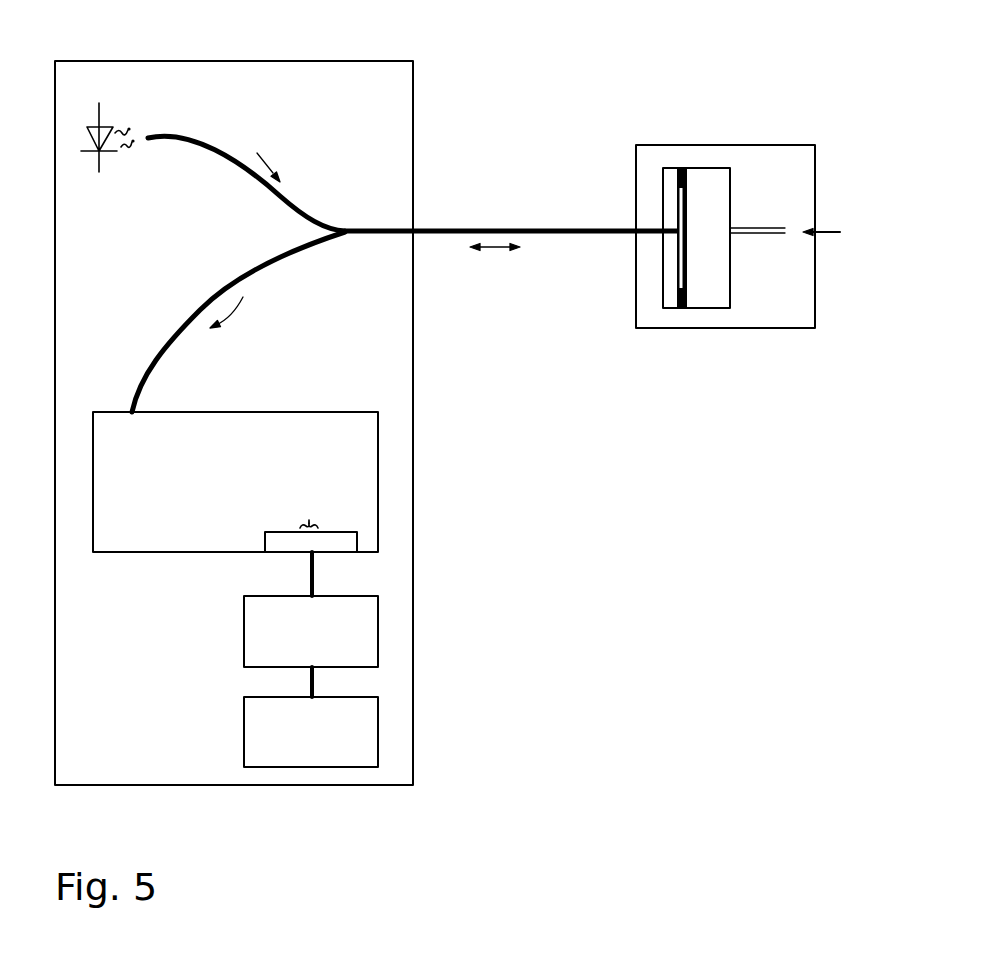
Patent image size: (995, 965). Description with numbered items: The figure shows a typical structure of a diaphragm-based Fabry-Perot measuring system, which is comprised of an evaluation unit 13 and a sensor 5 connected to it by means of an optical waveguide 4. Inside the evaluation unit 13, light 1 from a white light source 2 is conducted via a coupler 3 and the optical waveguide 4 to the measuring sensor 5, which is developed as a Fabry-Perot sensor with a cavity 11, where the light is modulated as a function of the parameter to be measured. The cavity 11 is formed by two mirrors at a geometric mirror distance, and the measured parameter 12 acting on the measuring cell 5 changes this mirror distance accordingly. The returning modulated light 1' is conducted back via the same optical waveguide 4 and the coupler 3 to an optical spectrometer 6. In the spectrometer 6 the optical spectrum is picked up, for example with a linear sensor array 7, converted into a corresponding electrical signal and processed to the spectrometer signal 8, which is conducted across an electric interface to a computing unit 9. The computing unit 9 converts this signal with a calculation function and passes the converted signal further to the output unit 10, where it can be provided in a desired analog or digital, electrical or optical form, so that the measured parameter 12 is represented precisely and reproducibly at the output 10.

The light 1 is at (161, 80).
The reflected light 1' is at (358, 307).
The white light source 2 is at (95, 127).
The coupler 3 is at (365, 230).
The optical waveguide 4 is at (508, 230).
The Fabry-Perot sensor 5 is at (675, 135).
The optical spectrometer 6 is at (387, 445).
The linear sensor array 7 is at (366, 537).
The spectrometer signal 8 is at (324, 573).
The computing unit 9 is at (386, 615).
The output unit 10 is at (386, 728).
The cavity 11 is at (688, 170).
The measured parameter 12 is at (833, 232).
The evaluation unit 13 is at (421, 765).